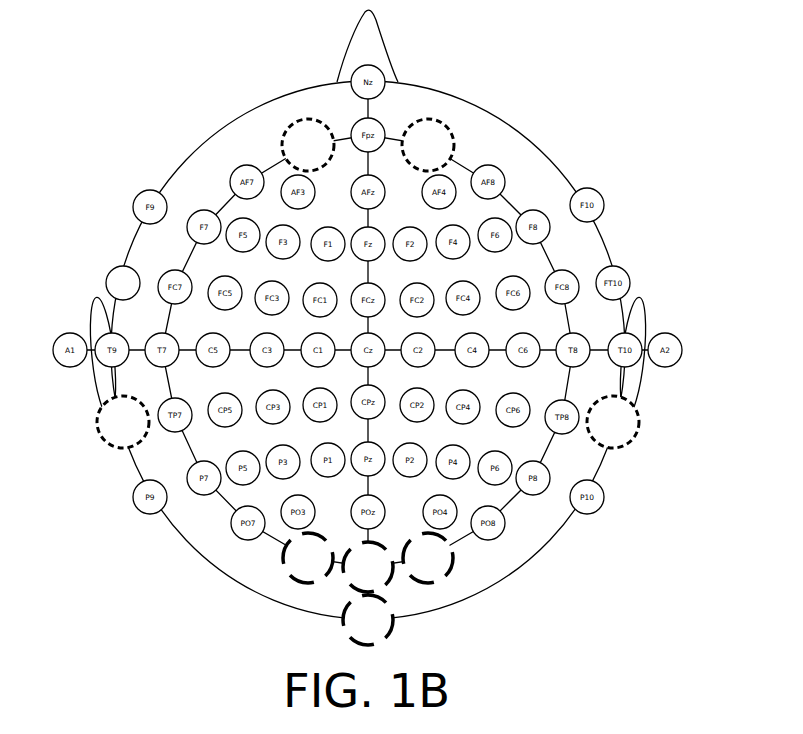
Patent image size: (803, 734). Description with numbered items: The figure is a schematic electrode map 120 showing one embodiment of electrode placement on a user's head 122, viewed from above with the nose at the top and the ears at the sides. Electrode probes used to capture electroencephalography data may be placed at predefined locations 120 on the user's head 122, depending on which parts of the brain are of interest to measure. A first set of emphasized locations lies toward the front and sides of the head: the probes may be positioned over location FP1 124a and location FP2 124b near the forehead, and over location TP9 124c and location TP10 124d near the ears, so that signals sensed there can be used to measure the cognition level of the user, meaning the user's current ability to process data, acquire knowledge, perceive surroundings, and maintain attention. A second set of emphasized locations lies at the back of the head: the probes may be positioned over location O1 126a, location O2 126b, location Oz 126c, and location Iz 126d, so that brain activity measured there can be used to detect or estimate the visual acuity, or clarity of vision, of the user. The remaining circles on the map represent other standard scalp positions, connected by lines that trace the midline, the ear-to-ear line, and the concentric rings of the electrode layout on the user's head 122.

The electrode map 120 is at (108, 277).
The user's head 122 is at (200, 143).
The location FP1 124a is at (287, 132).
The location FP2 124b is at (450, 135).
The location TP9 124c is at (100, 442).
The location TP10 124d is at (640, 430).
The location O1 126a is at (283, 560).
The location O2 126b is at (450, 573).
The location Oz 126c is at (393, 580).
The location Iz 126d is at (348, 630).